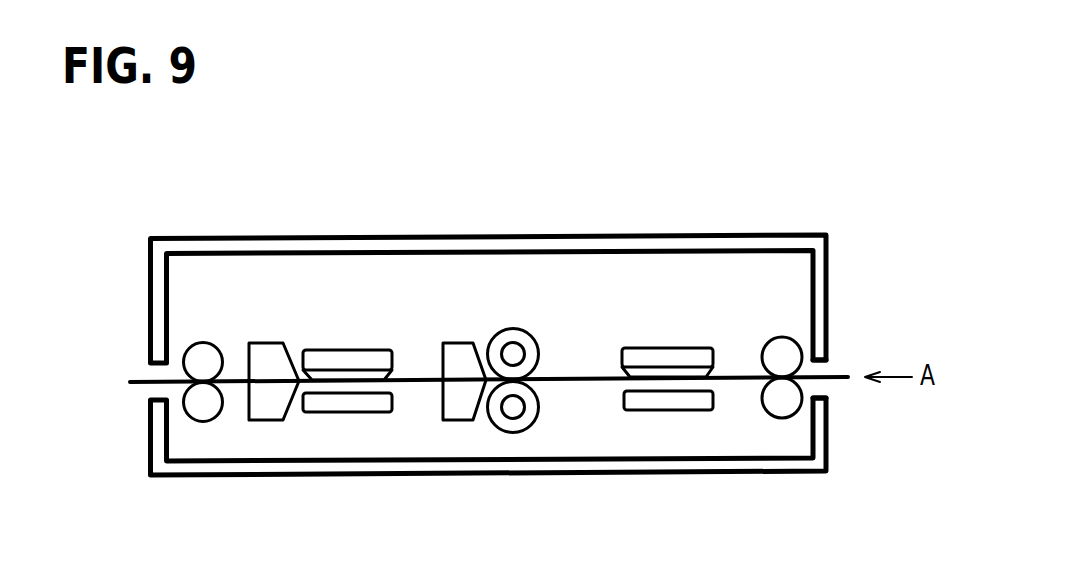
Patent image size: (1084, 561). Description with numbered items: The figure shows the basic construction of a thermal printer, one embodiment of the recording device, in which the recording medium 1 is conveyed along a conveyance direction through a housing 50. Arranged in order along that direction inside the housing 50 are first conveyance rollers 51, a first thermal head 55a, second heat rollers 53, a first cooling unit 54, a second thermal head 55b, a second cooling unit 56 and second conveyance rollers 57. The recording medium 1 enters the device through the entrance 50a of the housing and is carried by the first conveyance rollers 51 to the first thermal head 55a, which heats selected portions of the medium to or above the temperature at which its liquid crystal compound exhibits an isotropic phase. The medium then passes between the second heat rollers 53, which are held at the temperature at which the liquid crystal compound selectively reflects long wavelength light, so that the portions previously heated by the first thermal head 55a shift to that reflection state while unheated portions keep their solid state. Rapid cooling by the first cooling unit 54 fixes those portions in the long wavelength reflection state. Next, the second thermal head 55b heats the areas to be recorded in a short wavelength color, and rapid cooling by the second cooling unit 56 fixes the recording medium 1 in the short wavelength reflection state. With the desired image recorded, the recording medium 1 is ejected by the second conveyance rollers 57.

The recording medium 1 is at (835, 373).
The housing 50 is at (829, 256).
The entrance 50a is at (825, 385).
The first conveyance rollers 51 is at (797, 347).
The second heat rollers 53 is at (513, 329).
The first cooling unit 54 is at (456, 343).
The first thermal head 55a is at (662, 348).
The second thermal head 55b is at (342, 352).
The second cooling unit 56 is at (273, 343).
The second conveyance rollers 57 is at (203, 343).